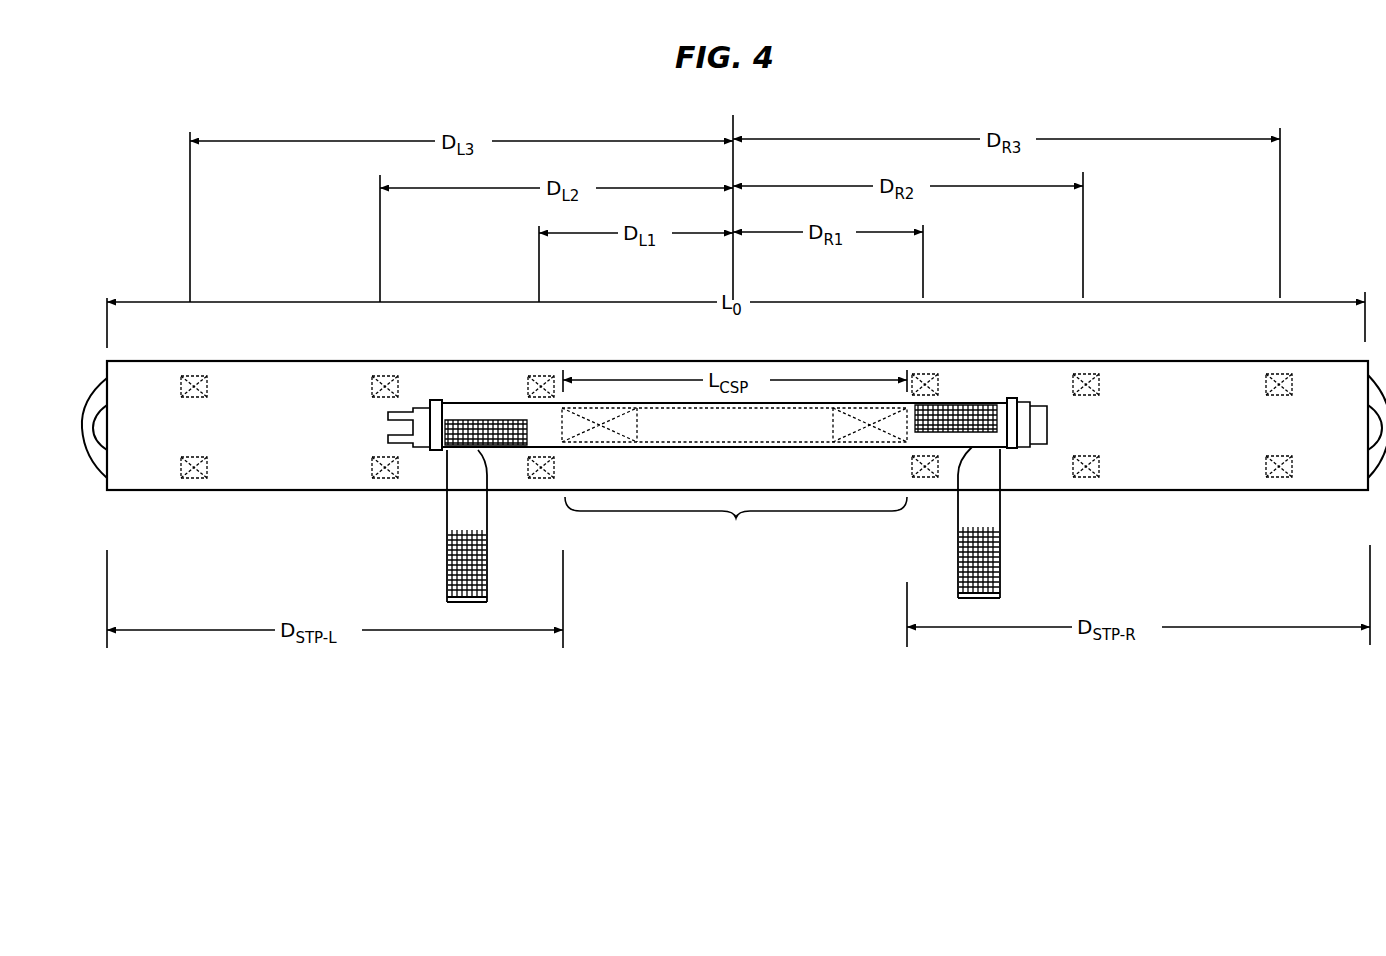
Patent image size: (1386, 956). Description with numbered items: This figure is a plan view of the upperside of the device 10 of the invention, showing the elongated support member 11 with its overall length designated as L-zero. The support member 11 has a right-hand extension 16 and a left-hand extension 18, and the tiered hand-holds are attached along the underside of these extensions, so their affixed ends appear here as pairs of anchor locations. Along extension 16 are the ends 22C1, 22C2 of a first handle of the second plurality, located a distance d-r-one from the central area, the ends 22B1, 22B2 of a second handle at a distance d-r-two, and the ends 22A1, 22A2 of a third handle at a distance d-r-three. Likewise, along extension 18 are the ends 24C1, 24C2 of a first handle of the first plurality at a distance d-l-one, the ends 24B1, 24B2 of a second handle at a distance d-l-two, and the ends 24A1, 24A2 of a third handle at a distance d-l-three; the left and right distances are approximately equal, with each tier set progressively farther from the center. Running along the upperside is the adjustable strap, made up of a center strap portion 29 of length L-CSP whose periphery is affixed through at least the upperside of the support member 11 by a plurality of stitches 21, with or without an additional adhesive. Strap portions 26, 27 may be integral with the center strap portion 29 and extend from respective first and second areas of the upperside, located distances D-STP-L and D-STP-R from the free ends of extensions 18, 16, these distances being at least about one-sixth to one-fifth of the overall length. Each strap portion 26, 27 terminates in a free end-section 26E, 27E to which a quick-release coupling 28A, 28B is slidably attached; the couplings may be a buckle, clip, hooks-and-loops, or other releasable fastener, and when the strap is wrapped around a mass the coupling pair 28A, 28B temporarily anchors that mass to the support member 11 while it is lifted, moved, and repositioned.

The spinal implant / sensor assembly device 10 is at (1334, 266).
The support member 11 is at (275, 361).
The extension 16 is at (1233, 494).
The extension 18 is at (246, 494).
The stitches 21 is at (857, 430).
The handle end 22A1 is at (1280, 395).
The handle end 22A2 is at (1283, 477).
The handle end 22B1 is at (1100, 383).
The handle end 22B2 is at (1100, 467).
The handle end 22C1 is at (928, 374).
The handle end 22C2 is at (930, 477).
The handle end 24A1 is at (194, 376).
The handle end 24A2 is at (194, 478).
The handle end 24B1 is at (372, 385).
The handle end 24B2 is at (372, 468).
The handle end 24C1 is at (528, 378).
The handle end 24C2 is at (542, 478).
The strap portion 26 is at (477, 410).
The free end-section 26E is at (436, 402).
The strap portion 27 is at (947, 405).
The free end-section 27E is at (1007, 400).
The quick-release coupling 28A is at (423, 446).
The quick-release coupling 28B is at (1043, 450).
The center strap portion 29 is at (736, 521).